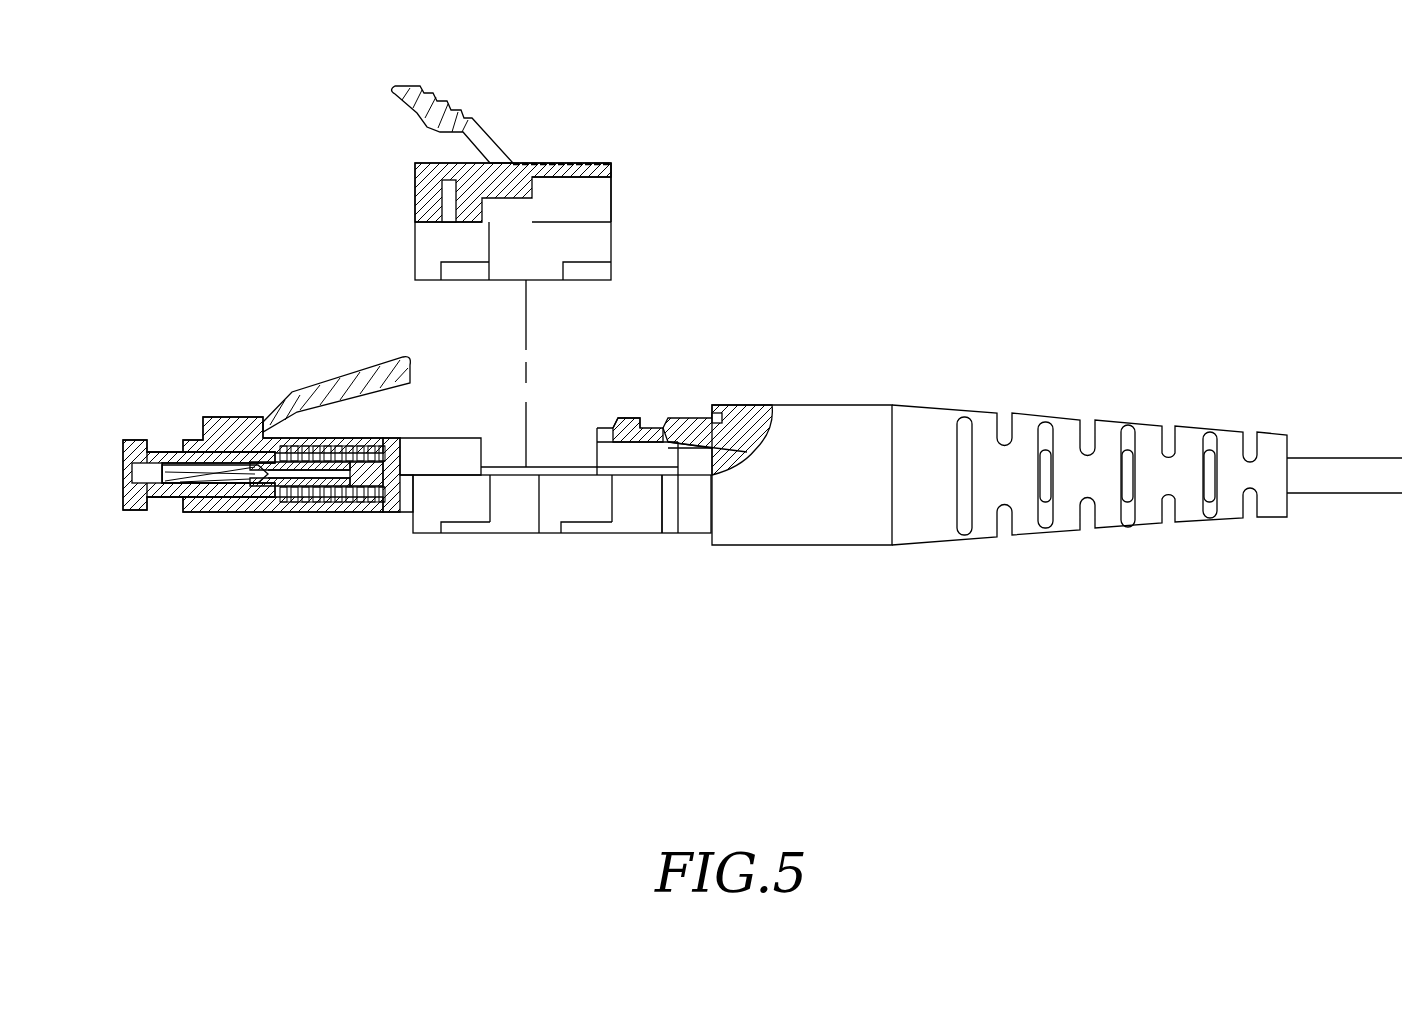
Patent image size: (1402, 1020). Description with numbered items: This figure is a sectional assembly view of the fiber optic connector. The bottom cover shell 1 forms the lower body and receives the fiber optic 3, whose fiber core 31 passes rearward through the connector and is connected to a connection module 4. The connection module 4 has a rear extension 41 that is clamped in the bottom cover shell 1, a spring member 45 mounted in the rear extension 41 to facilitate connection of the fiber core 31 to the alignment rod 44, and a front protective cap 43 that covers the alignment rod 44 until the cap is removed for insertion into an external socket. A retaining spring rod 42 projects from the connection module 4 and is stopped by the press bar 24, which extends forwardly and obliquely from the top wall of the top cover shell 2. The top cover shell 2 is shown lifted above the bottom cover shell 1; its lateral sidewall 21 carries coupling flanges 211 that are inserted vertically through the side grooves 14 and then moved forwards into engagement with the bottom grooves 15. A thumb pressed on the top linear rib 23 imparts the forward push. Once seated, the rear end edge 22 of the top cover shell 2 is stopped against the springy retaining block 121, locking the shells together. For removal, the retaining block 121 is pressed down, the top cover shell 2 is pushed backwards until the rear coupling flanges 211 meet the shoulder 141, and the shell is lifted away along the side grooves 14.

The bottom cover shell 1 is at (545, 540).
The top cover shell 2 is at (415, 193).
The fiber optic 3 is at (804, 420).
The connection module 4 is at (300, 446).
The side groove 14 is at (638, 512).
The bottom groove 15 is at (467, 523).
The lateral sidewall 21 is at (612, 212).
The rear end edge 22 is at (612, 165).
The top linear rib 23 is at (558, 161).
The press bar 24 is at (398, 86).
The fiber core 31 is at (497, 466).
The rear extension 41 is at (447, 440).
The retaining spring rod 42 is at (345, 380).
The front protective cap 43 is at (135, 440).
The alignment rod 44 is at (217, 483).
The spring member 45 is at (287, 500).
The retaining block 121 is at (632, 416).
The shoulder 141 is at (672, 512).
The coupling flange 211 is at (605, 273).